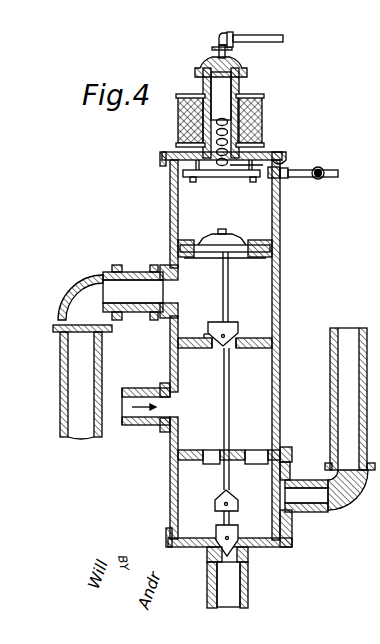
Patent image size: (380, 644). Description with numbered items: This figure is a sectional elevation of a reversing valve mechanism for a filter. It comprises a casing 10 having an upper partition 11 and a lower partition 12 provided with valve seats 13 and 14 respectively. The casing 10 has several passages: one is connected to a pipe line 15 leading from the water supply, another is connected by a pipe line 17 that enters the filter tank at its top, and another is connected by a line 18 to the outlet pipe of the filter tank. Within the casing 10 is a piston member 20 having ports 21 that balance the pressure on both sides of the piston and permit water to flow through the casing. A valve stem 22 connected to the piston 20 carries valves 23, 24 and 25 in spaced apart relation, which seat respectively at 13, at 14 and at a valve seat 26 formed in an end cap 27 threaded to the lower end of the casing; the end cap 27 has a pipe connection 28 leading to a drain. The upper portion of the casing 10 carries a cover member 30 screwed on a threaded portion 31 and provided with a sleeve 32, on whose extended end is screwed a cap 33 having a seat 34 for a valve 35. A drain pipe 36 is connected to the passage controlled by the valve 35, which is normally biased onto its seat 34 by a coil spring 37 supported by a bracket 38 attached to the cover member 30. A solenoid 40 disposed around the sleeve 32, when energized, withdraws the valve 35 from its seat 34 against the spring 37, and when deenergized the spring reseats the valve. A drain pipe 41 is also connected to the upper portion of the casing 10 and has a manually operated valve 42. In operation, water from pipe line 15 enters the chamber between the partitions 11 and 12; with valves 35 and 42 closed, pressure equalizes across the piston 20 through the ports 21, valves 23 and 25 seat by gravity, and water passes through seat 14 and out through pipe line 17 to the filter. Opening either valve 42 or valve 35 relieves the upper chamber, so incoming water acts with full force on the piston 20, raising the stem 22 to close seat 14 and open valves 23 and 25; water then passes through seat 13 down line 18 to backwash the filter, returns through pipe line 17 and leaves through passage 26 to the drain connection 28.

The casing 10 is at (279, 274).
The partition 11 is at (250, 349).
The partition 12 is at (281, 461).
The valve seat 13 is at (239, 340).
The valve seat 14 is at (232, 462).
The pipe line 15 is at (137, 426).
The pipe line 17 is at (314, 517).
The line 18 is at (101, 360).
The piston member 20 is at (242, 237).
The ports 21 is at (195, 259).
The valve stem 22 is at (228, 298).
The valve 23 is at (226, 352).
The valve 24 is at (217, 502).
The valve 25 is at (219, 532).
The valve seat 26 is at (249, 550).
The end cap 27 is at (291, 542).
The pipe connection 28 is at (235, 590).
The cover member 30 is at (284, 153).
The threaded portion 31 is at (286, 169).
The sleeve 32 is at (242, 82).
The cap 33 is at (199, 68).
The seat 34 is at (229, 62).
The valve 35 is at (222, 90).
The drain pipe 36 is at (283, 40).
The coil spring 37 is at (233, 130).
The bracket 38 is at (227, 178).
The solenoid 40 is at (178, 123).
The drain pipe 41 is at (293, 178).
The valve 42 is at (323, 178).